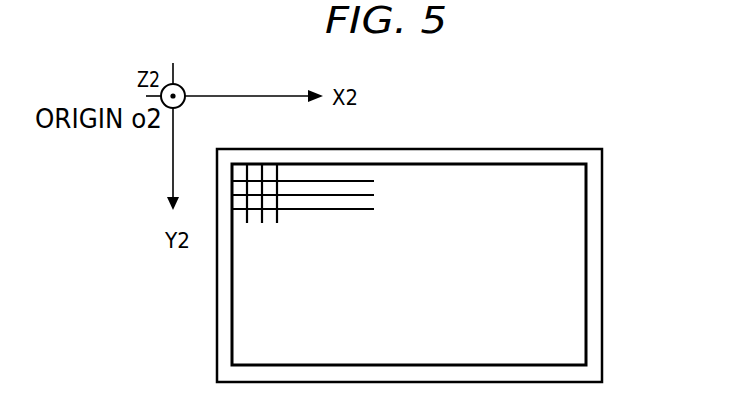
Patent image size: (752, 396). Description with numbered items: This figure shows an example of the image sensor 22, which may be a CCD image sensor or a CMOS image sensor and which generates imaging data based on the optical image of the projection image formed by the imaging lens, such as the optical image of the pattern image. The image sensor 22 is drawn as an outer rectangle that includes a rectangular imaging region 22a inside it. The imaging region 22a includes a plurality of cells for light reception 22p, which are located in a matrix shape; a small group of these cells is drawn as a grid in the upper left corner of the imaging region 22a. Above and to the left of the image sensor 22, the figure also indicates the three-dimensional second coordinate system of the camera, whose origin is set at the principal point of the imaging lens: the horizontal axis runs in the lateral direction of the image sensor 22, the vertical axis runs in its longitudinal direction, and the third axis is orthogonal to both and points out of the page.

The image sensor 22 is at (603, 173).
The imaging region 22a is at (449, 163).
The cells for light reception 22p is at (238, 175).